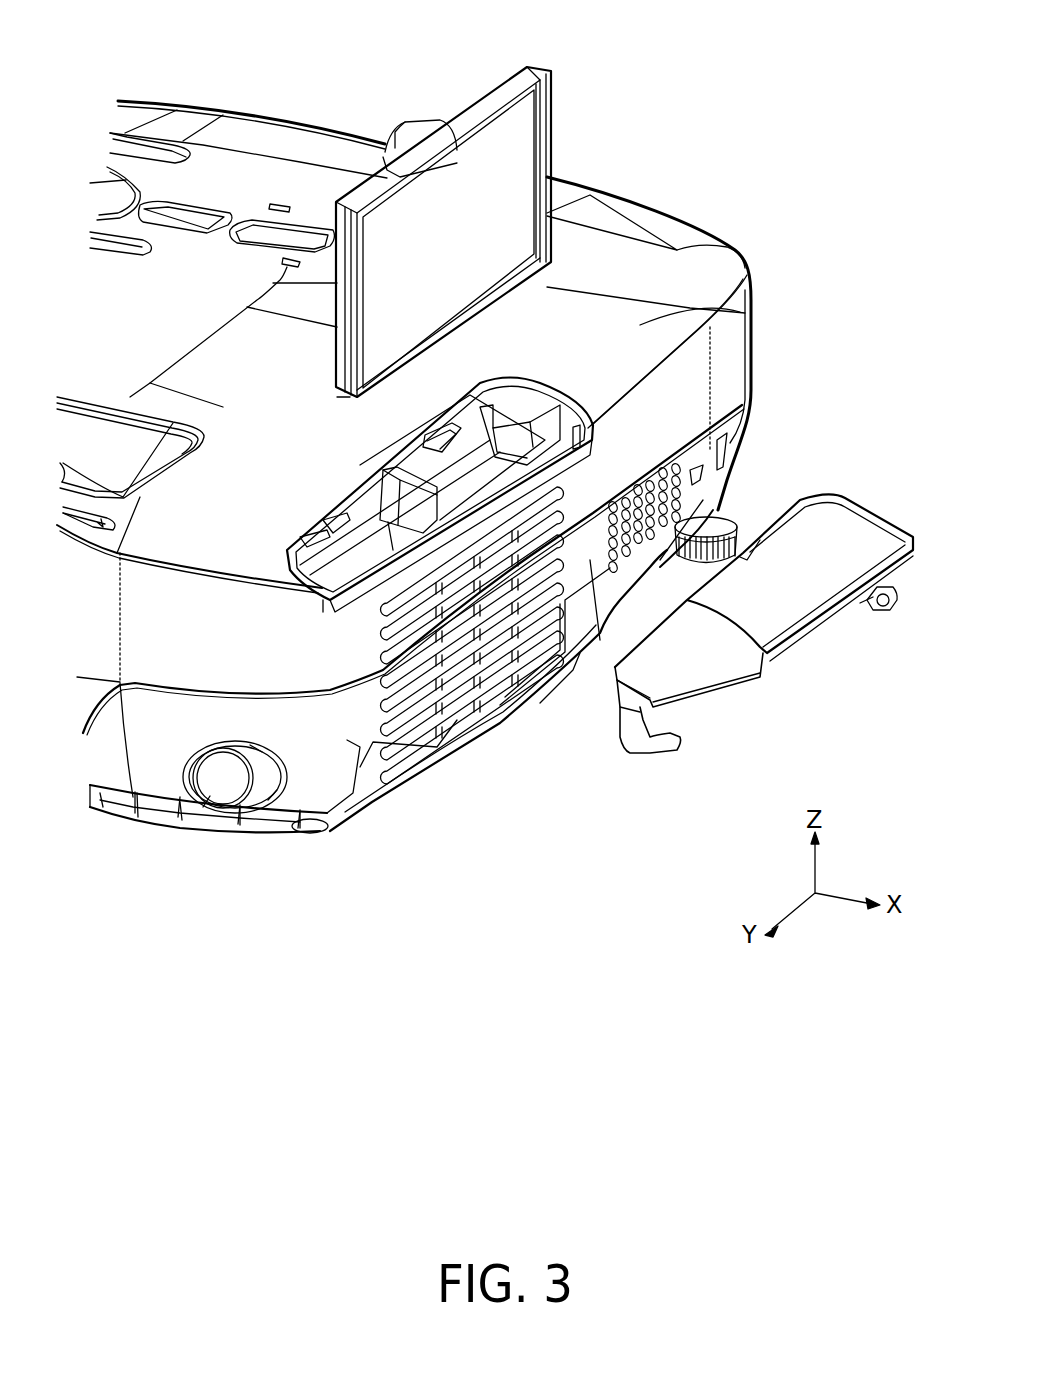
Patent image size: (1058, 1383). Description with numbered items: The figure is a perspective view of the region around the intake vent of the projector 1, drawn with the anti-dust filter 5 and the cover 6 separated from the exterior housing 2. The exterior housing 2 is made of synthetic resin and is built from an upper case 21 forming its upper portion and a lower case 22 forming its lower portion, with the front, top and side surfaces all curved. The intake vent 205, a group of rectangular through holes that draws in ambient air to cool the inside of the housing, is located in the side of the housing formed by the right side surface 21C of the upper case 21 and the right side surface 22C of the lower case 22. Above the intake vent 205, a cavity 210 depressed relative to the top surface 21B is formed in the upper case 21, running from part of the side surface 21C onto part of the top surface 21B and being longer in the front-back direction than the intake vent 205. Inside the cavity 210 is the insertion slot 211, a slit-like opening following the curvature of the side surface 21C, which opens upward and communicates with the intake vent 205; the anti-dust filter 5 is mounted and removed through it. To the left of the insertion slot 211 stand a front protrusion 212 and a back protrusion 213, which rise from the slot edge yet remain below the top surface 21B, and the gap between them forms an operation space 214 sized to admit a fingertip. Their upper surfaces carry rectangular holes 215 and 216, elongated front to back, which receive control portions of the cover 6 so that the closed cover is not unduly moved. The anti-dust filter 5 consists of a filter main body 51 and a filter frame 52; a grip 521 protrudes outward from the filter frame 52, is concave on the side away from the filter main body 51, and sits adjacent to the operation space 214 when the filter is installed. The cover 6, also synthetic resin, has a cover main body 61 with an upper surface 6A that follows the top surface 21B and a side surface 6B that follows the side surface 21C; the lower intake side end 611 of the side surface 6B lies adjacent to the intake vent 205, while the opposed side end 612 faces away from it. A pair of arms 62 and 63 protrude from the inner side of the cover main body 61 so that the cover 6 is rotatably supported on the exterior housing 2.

The projector 1 is at (692, 94).
The exterior housing 2 is at (716, 214).
The anti-dust filter 5 is at (557, 133).
The filter main body 51 is at (547, 242).
The filter frame 52 is at (490, 107).
The grip 521 is at (420, 147).
The cover 6 is at (885, 501).
The upper surface 6A is at (823, 510).
The side surface 6B is at (840, 607).
The cover main body 61 is at (703, 672).
The intake side end 611 is at (803, 647).
The opposed side end 612 is at (770, 523).
The arm 62 is at (643, 743).
The arm 63 is at (897, 582).
The upper case 21 is at (237, 673).
The lower case 22 is at (307, 777).
The top surface 21B is at (660, 327).
The side surface 21C is at (580, 513).
The side surface 22C is at (563, 645).
The intake vent 205 is at (480, 680).
The cavity 210 is at (583, 390).
The insertion slot 211 is at (523, 473).
The protrusion 212 is at (317, 540).
The protrusion 213 is at (417, 457).
The operation space 214 is at (373, 493).
The rectangular hole 215 is at (333, 530).
The rectangular hole 216 is at (447, 427).